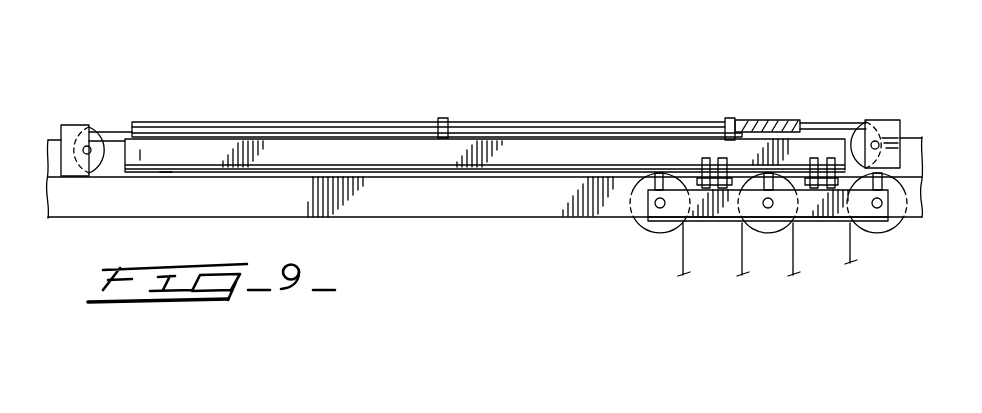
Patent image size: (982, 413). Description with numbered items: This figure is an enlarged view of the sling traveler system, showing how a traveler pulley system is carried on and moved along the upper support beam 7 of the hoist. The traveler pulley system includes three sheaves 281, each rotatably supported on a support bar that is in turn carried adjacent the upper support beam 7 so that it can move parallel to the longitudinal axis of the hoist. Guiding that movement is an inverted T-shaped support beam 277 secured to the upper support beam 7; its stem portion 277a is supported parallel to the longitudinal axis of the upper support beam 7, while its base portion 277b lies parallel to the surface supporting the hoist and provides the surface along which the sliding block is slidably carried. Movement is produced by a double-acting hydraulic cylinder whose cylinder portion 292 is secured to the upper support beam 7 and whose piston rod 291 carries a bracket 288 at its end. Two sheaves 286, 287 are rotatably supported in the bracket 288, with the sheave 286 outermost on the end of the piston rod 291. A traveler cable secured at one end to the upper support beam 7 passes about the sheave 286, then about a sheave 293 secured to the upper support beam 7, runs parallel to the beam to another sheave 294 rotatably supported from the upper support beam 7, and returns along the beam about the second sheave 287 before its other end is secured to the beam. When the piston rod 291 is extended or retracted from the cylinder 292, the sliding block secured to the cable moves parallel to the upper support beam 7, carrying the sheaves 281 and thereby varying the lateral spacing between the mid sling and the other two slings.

The upper support beam 7 is at (912, 137).
The inverted T-shaped support beam 277 is at (386, 156).
The stem portion 277a is at (140, 160).
The base portion 277b is at (165, 178).
The sheaves 281 is at (642, 233).
The sheave 286 is at (797, 120).
The sheave 287 is at (741, 118).
The bracket 288 is at (768, 119).
The piston rod 291 is at (635, 122).
The cylinder portion 292 is at (233, 122).
The sheave 293 is at (858, 138).
The sheave 294 is at (102, 130).